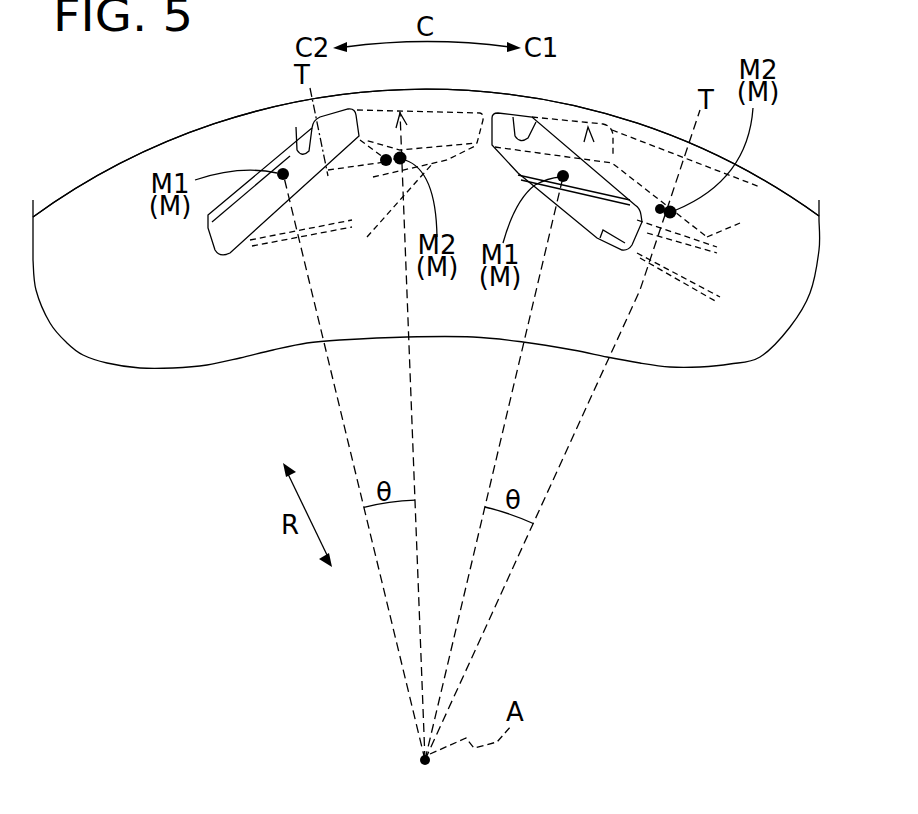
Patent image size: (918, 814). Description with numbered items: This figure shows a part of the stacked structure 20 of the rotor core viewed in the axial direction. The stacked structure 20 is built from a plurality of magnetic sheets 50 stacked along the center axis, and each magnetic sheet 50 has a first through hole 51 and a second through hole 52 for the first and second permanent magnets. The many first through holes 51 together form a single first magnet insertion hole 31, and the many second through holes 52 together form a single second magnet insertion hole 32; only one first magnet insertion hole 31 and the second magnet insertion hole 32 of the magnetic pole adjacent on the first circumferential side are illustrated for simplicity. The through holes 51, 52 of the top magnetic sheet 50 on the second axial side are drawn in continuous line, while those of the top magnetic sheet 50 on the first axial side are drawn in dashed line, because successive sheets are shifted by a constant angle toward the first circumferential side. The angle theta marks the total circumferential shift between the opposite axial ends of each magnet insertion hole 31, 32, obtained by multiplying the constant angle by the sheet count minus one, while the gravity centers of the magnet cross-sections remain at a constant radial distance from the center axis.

The stacked structure 20 is at (100, 170).
The magnetic sheet 50 is at (160, 143).
The first through hole 51 is at (292, 145).
The second through hole 52 is at (512, 198).
The first magnet insertion hole 31 is at (404, 112).
The second magnet insertion hole 32 is at (610, 132).